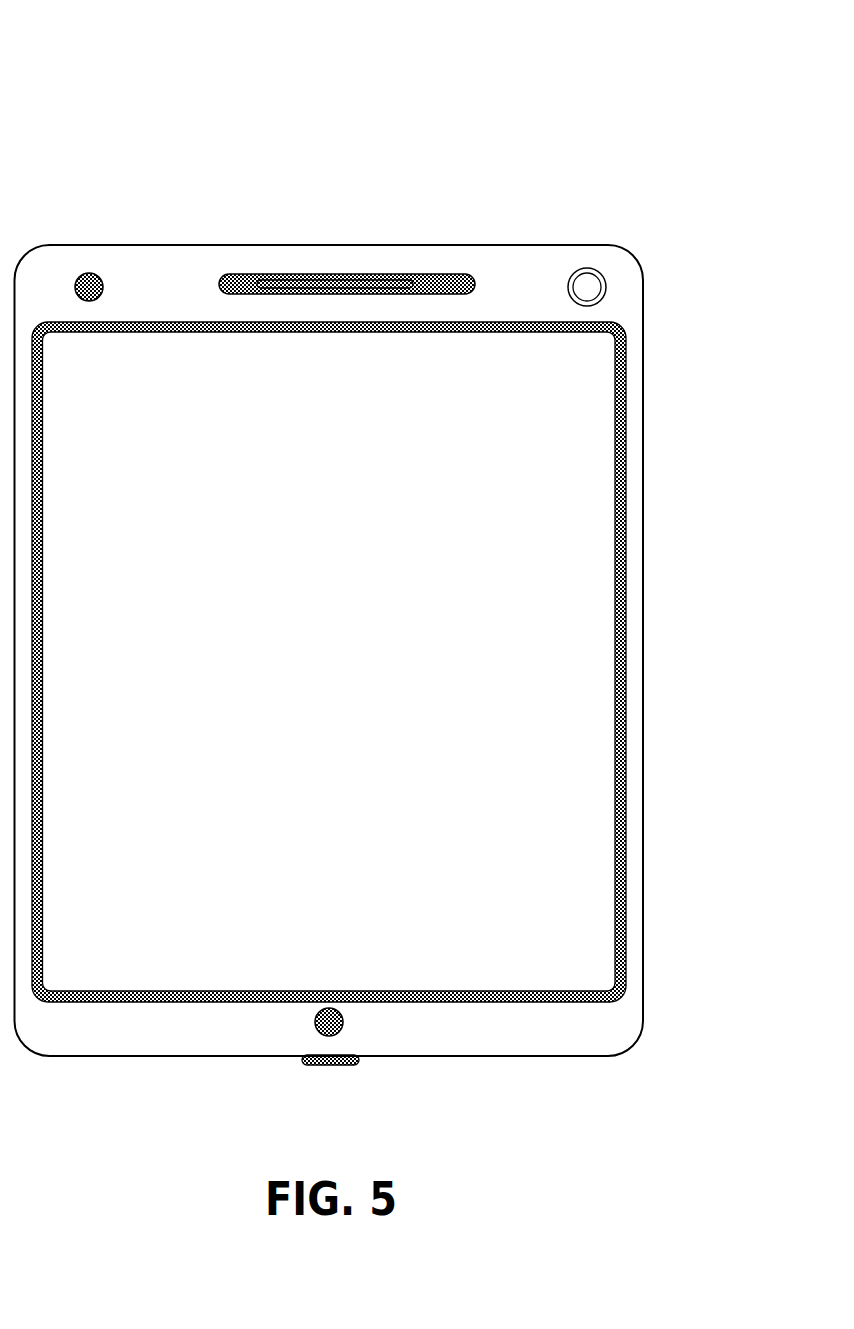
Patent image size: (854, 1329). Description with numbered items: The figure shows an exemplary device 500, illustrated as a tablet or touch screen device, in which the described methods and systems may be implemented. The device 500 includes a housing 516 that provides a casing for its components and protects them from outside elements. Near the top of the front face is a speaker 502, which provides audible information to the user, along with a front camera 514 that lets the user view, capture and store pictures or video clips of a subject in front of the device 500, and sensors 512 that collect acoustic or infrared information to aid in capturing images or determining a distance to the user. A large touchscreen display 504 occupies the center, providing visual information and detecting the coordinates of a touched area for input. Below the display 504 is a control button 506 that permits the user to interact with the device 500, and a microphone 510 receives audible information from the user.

The device 500 is at (128, 22).
The speaker 502 is at (338, 274).
The touchscreen display 504 is at (446, 327).
The control button 506 is at (343, 1022).
The microphone 510 is at (343, 1065).
The sensors 512 is at (606, 287).
The front camera 514 is at (89, 273).
The housing 516 is at (626, 453).